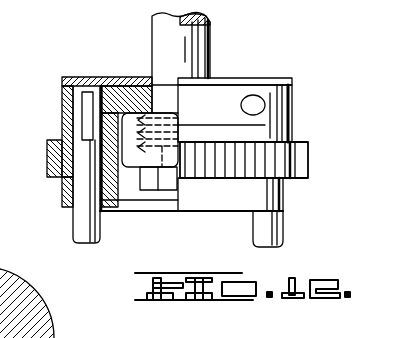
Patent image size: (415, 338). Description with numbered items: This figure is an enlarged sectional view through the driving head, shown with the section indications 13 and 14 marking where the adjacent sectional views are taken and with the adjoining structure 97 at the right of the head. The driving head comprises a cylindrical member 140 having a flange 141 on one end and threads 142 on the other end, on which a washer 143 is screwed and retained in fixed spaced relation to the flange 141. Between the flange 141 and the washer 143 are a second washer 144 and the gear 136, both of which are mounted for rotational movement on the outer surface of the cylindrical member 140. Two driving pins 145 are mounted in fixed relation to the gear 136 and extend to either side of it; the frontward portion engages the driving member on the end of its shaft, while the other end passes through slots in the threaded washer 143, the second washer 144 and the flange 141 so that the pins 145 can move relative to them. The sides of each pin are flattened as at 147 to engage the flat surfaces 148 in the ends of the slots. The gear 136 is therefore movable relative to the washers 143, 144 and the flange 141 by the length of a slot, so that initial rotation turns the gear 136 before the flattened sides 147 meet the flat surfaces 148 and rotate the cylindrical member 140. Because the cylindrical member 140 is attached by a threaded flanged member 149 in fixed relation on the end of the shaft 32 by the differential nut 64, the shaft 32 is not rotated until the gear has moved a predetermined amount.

The section line 13- 13 is at (22, 118).
The section line 14- 14 is at (48, 135).
The shaft 32 is at (200, 55).
The differential nut 64 is at (165, 188).
The valve block 97 is at (257, 82).
The gear 136 is at (296, 172).
The cylindrical member 140 is at (122, 176).
The flange 141 is at (65, 95).
The threads 142 is at (117, 210).
The washer 143 is at (62, 192).
The second washer 144 is at (50, 143).
The driving pins 145 is at (76, 239).
The flattened sides 147 is at (97, 79).
The flat surfaces 148 is at (47, 326).
The threaded flanged member 149 is at (134, 76).